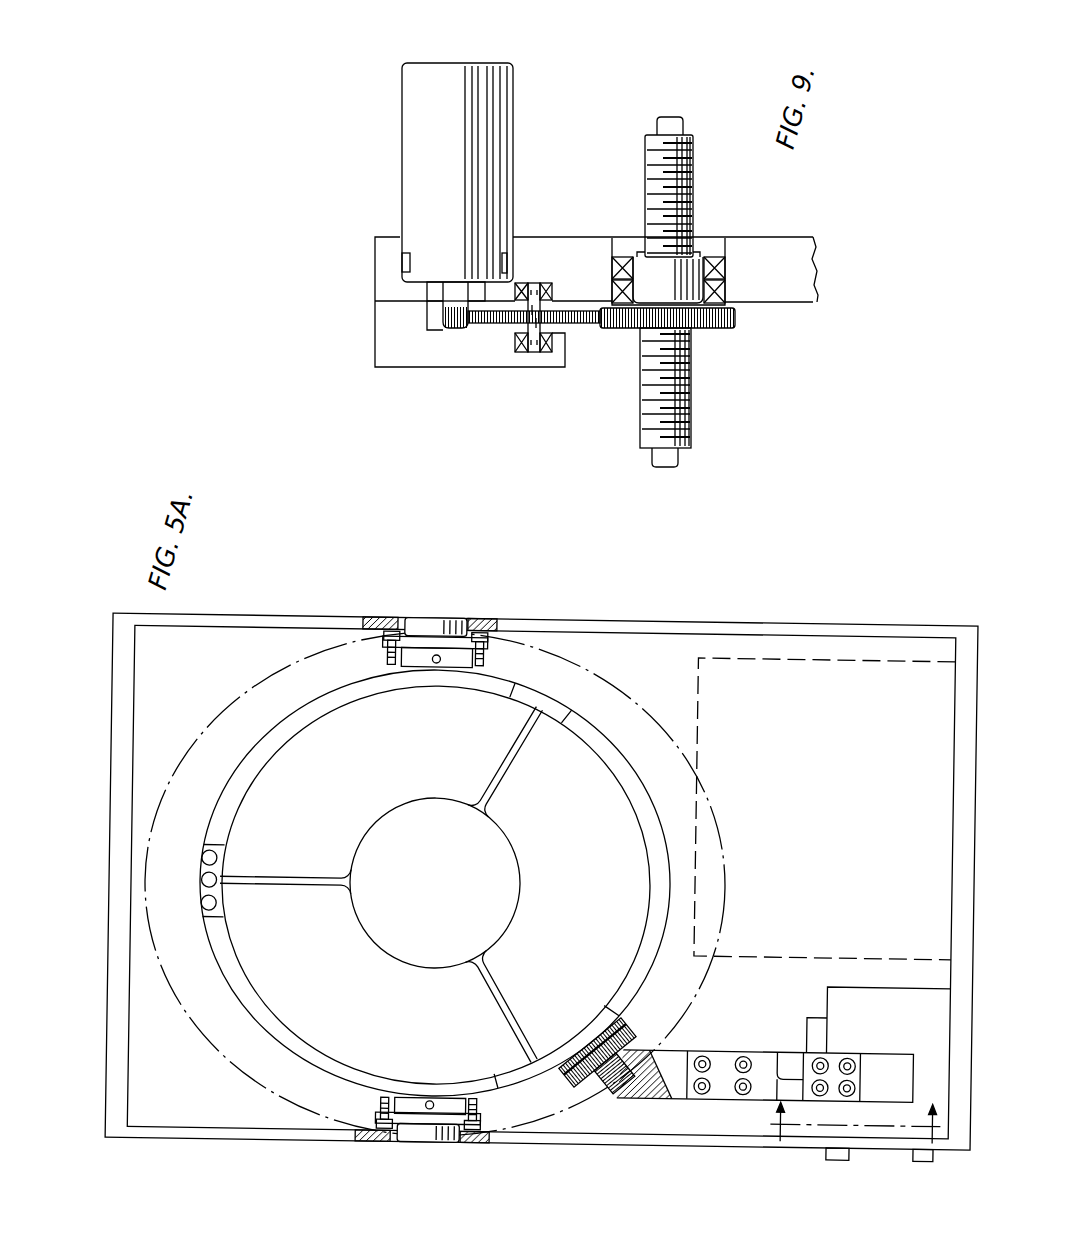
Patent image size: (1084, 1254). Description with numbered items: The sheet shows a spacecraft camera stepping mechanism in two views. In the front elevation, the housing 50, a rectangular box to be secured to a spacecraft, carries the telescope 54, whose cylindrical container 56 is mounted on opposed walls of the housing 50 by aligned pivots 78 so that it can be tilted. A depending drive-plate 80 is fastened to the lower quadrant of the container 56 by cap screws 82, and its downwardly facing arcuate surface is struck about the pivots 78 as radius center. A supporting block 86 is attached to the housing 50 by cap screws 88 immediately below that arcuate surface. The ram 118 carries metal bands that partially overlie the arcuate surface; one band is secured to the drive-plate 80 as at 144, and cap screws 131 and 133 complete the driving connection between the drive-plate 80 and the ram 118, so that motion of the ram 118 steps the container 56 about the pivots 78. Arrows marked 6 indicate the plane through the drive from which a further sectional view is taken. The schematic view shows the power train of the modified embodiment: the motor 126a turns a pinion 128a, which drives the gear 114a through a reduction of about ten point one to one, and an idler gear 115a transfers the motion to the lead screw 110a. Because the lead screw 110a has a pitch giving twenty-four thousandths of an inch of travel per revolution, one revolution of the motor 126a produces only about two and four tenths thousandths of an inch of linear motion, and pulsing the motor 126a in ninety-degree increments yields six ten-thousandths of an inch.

In FIG. 5A, the housing 50 is at (268, 618).
In FIG. 5A, the telescope 54 is at (270, 1054).
In FIG. 5A, the cylindrical container 56 is at (230, 758).
In FIG. 5A, the pivots 78 is at (432, 618).
In FIG. 5A, the drive-plate 80 is at (723, 1095).
In FIG. 5A, the cap screws 82 is at (623, 1074).
In FIG. 5A, the cap screws 88 is at (907, 1158).
In FIG. 5A, the ram 118 is at (883, 1070).
In FIG. 5A, the cap screws 131 is at (697, 1076).
In FIG. 5A, the cap screws 133 is at (847, 1076).
In FIG. 5A, the band securing location 144 is at (723, 1060).
In FIG. 5A, the section line 6- 6 is at (847, 1121).
In FIG. 9, the supporting block 86 is at (743, 282).
In FIG. 9, the lead screw 110a is at (677, 457).
In FIG. 9, the gear 114a is at (615, 328).
In FIG. 9, the idler gear 115a is at (582, 325).
In FIG. 9, the motor 126a is at (420, 130).
In FIG. 9, the pinion 128a is at (448, 328).